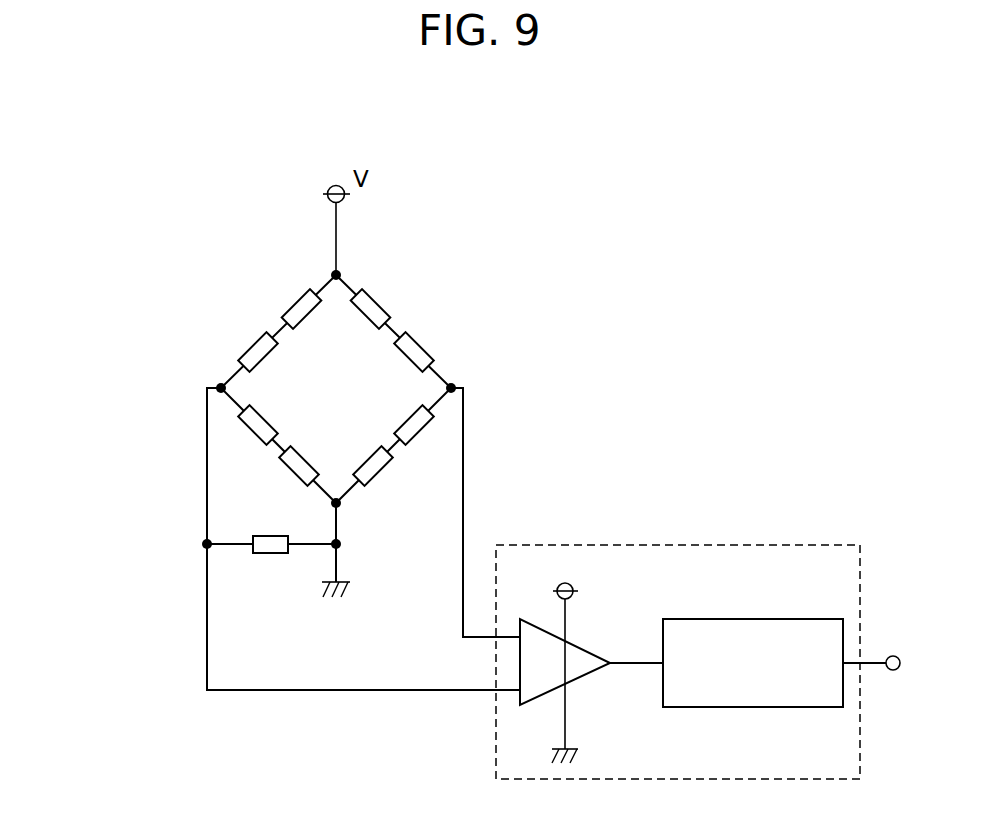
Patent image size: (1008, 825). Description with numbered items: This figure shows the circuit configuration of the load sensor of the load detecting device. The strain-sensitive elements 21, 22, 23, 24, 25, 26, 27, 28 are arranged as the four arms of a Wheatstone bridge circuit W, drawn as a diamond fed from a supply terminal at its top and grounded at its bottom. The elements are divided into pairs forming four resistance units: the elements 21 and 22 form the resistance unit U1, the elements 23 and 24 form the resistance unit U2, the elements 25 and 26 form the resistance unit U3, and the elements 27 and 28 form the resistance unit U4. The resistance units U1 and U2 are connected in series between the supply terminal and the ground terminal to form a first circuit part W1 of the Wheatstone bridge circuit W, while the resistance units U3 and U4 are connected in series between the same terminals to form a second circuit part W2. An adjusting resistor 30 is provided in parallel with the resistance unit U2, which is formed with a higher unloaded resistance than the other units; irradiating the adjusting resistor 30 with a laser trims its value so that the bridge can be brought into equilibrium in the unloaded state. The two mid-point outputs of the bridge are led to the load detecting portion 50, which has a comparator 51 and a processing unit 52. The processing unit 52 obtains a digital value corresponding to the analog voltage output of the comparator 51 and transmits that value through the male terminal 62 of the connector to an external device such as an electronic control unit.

The Wheatstone bridge circuit W is at (387, 282).
The first circuit part W1 is at (92, 270).
The second circuit part W2 is at (578, 270).
The resistance unit U1 is at (141, 262).
The resistance unit U2 is at (141, 452).
The resistance unit U3 is at (521, 262).
The resistance unit U4 is at (521, 452).
The element 21 is at (252, 350).
The element 22 is at (298, 305).
The element 23 is at (254, 428).
The element 24 is at (297, 470).
The element 25 is at (423, 347).
The element 26 is at (380, 305).
The element 27 is at (423, 428).
The element 28 is at (380, 470).
The adjusting resistor 30 is at (282, 553).
The load detecting portion 50 is at (775, 545).
The comparator 51 is at (592, 645).
The processing unit 52 is at (764, 619).
The male terminal 62 is at (893, 656).